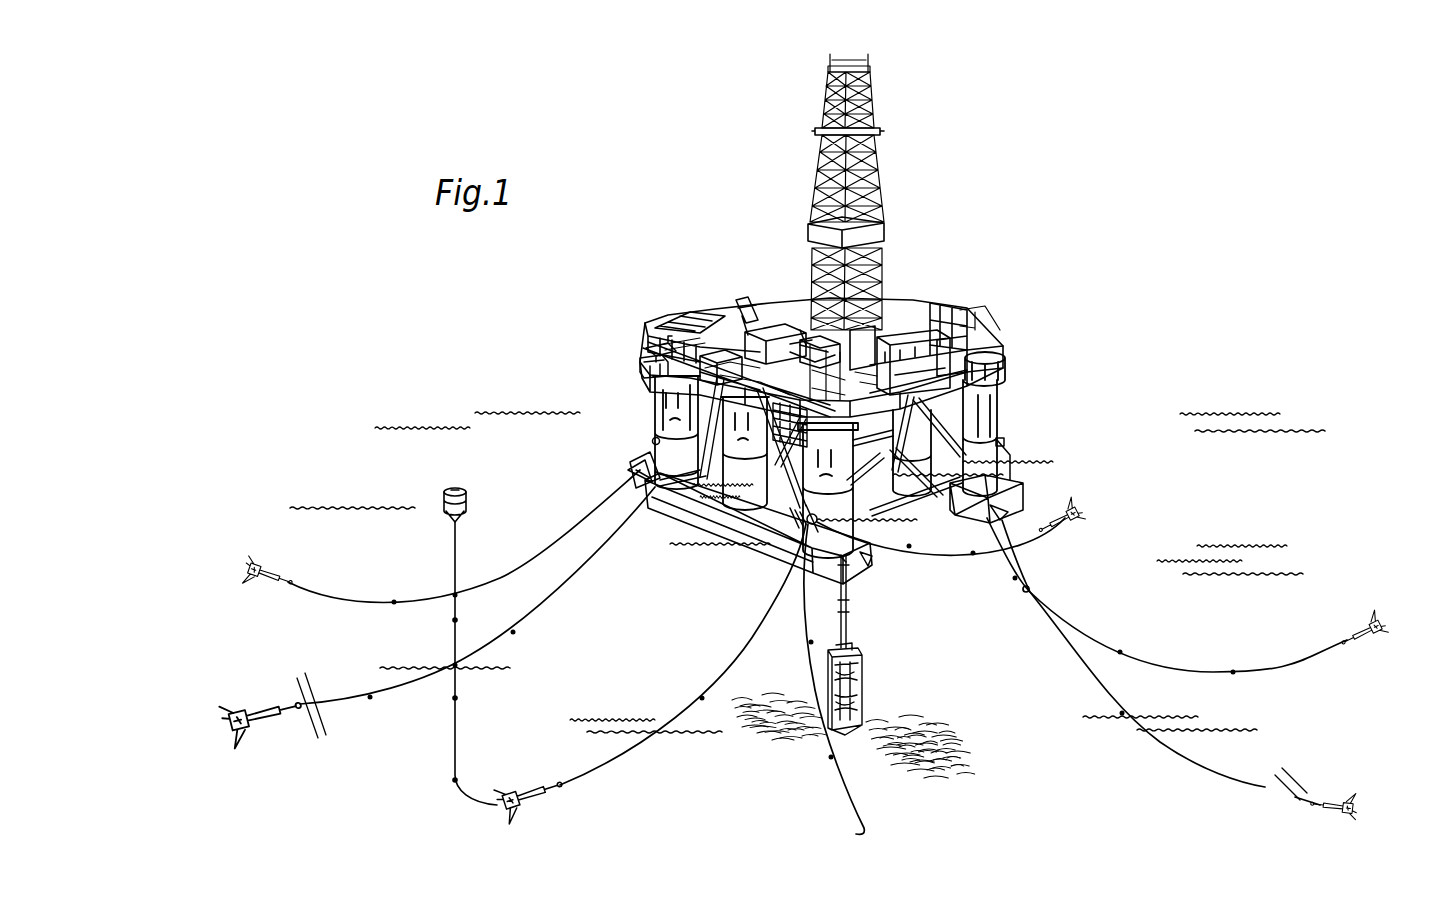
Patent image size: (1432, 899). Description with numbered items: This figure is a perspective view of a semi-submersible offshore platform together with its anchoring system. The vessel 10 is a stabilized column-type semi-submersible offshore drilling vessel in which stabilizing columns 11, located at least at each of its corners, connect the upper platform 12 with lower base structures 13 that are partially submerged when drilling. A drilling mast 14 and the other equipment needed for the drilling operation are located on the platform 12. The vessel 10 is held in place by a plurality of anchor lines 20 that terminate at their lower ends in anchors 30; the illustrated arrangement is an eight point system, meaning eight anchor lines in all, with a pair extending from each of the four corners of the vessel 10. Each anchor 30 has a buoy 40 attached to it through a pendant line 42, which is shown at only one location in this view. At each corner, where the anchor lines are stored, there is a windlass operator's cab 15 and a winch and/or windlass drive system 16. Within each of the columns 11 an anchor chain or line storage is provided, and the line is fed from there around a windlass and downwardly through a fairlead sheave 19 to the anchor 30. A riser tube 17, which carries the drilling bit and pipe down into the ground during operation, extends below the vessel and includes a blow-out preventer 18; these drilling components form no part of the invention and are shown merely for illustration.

The vessel 10 is at (997, 327).
The stabilizing columns 11 is at (998, 408).
The upper platform 12 is at (1008, 360).
The lower base structures 13 is at (1005, 502).
The drilling mast 14 is at (878, 187).
The windlass operator's cab 15 is at (740, 365).
The winch and/or windlass drive system 16 is at (797, 420).
The riser tube 17 is at (849, 625).
The blow-out preventer 18 is at (864, 683).
The fairlead sheave 19 is at (652, 440).
The anchor lines 20 is at (597, 550).
The anchors 30 is at (274, 600).
The buoy 40 is at (463, 496).
The pendant line 42 is at (458, 721).